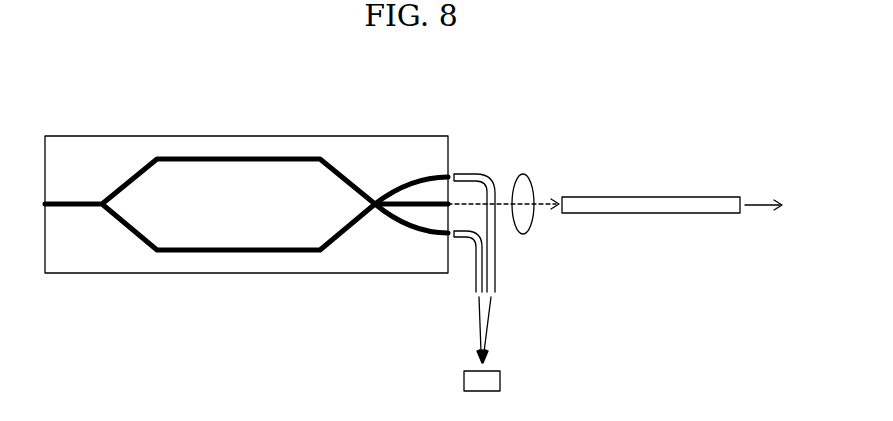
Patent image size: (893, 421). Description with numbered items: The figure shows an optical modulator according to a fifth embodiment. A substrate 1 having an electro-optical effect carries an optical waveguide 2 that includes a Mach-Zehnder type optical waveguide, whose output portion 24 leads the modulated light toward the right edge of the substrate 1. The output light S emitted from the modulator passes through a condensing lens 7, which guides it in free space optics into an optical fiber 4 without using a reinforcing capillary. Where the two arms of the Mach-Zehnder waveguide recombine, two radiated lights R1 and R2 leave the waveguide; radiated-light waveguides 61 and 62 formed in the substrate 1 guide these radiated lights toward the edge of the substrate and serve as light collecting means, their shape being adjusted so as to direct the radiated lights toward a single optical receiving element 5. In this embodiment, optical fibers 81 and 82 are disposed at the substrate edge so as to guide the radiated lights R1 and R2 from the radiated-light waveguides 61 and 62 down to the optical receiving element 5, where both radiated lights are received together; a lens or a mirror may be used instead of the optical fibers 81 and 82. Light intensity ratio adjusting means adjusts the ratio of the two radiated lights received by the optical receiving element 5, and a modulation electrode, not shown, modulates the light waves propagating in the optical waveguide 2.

The substrate 1 is at (157, 147).
The optical waveguide 2 is at (242, 150).
The Mach-Zehnder type optical waveguide output portion 24 is at (432, 202).
The radiated-light waveguide 61 is at (405, 183).
The radiated-light waveguide 62 is at (403, 231).
The optical fiber 81 is at (477, 172).
The optical fiber 82 is at (468, 241).
The condensing lens 7 is at (530, 232).
The optical fiber 4 is at (600, 203).
The optical receiving element 5 is at (490, 381).
The radiated light R1 is at (498, 330).
The radiated light R2 is at (470, 330).
The output light S is at (763, 197).